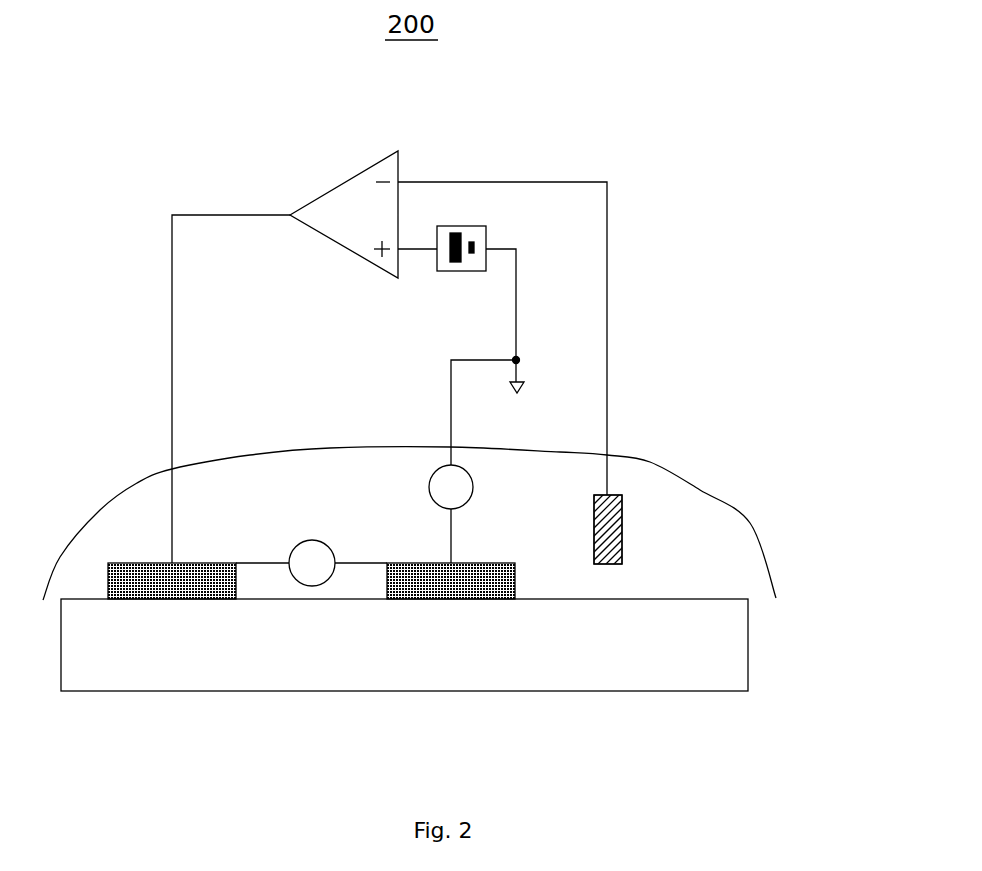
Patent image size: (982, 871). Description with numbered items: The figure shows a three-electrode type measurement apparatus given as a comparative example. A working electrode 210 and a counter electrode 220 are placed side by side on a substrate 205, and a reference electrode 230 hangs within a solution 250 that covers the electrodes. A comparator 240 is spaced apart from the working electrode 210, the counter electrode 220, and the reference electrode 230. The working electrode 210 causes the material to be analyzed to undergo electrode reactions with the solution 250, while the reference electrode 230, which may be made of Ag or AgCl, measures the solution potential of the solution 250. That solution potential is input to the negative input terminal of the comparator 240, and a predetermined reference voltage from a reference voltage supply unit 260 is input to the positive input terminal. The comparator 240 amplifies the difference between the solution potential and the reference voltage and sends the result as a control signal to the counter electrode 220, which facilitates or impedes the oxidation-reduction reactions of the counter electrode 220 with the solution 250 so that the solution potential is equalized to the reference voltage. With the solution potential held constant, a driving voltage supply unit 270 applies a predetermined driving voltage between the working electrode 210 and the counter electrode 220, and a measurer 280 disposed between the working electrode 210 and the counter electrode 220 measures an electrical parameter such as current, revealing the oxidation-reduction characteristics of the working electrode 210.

The substrate 205 is at (726, 652).
The working electrode 210 is at (458, 592).
The counter electrode 220 is at (169, 592).
The reference electrode 230 is at (622, 528).
The comparator 240 is at (344, 180).
The solution 250 is at (137, 502).
The reference voltage supply unit 260 is at (463, 273).
The driving voltage supply unit 270 is at (429, 478).
The measurer 280 is at (315, 541).